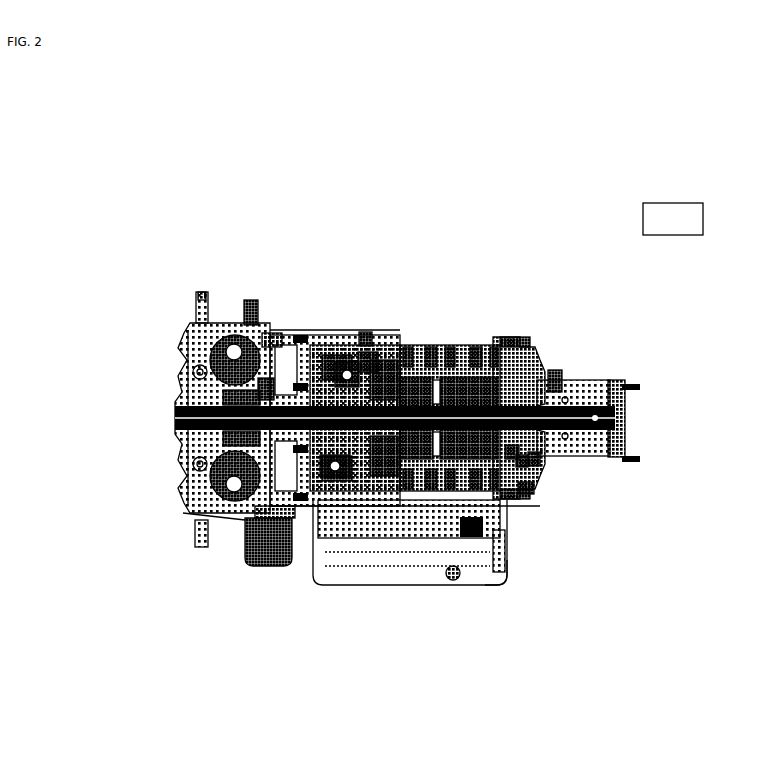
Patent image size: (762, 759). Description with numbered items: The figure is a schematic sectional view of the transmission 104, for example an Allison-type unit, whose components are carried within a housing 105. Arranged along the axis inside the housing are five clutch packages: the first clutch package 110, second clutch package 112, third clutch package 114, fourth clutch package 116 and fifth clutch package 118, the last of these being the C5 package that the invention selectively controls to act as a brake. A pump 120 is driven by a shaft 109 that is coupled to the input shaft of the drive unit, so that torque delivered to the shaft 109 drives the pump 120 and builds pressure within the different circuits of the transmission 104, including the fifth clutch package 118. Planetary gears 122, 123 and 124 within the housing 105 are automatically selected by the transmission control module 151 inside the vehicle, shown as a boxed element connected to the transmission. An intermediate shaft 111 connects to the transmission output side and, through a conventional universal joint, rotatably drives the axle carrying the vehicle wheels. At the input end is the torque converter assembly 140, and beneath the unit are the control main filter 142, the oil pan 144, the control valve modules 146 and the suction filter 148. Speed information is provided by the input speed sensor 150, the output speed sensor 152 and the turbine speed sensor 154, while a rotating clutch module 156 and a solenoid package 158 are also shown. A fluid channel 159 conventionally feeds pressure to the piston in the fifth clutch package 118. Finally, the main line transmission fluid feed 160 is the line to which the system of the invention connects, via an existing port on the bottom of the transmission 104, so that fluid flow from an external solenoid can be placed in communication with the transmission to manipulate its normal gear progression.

The transmission 104 is at (203, 292).
The housing 105 is at (250, 300).
The shaft 109 is at (175, 503).
The first clutch package 110 is at (350, 373).
The intermediate shaft 111 is at (542, 443).
The second clutch package 112 is at (365, 367).
The third clutch package 114 is at (413, 353).
The fourth clutch package 116 is at (457, 352).
The fifth clutch package 118 is at (502, 340).
The pump 120 is at (266, 385).
The planetary gear 122 is at (513, 452).
The planetary gear 123 is at (520, 457).
The planetary gear 124 is at (533, 457).
The torque converter assembly 140 is at (188, 322).
The control main filter 142 is at (265, 567).
The oil pan 144 is at (496, 578).
The control valve modules 146 is at (458, 530).
The suction filter 148 is at (360, 573).
The input speed sensor 150 is at (272, 340).
The transmission control module 151 is at (536, 353).
The output speed sensor 152 is at (560, 368).
The turbine speed sensor 154 is at (363, 333).
The rotating clutch module 156 is at (333, 465).
The solenoid package 158 is at (503, 580).
The fluid channel 159 is at (527, 487).
The main line transmission fluid feed 160 is at (267, 508).